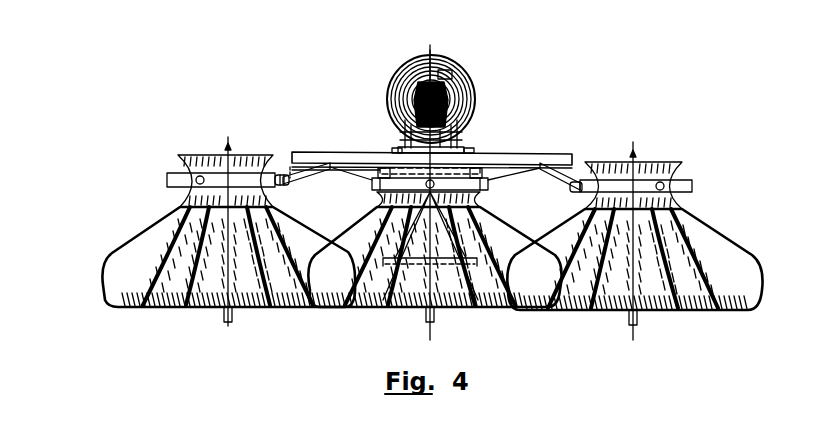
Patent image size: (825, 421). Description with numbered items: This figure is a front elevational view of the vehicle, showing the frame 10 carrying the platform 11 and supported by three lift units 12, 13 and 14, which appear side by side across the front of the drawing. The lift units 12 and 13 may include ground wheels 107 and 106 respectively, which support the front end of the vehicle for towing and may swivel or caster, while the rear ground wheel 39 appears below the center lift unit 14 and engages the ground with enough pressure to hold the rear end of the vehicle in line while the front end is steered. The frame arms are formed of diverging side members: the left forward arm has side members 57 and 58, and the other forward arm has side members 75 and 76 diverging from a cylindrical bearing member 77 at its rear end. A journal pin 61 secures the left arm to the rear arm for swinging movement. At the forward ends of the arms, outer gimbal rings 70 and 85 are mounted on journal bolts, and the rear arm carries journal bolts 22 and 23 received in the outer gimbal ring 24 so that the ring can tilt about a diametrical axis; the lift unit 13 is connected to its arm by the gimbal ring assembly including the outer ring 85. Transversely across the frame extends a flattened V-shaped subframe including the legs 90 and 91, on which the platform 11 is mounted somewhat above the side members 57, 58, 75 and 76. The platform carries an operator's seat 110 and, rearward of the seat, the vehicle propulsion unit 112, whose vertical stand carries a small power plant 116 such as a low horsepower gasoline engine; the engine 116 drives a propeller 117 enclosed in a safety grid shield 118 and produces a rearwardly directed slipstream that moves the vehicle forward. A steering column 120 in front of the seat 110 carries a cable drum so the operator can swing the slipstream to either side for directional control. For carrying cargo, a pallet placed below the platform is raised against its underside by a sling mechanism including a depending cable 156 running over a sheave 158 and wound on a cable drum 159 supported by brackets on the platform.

The frame 10 is at (340, 184).
The platform 11 is at (452, 144).
The lift unit 12 is at (760, 288).
The lift unit 13 is at (110, 262).
The lift unit 14 is at (352, 230).
The journal bolt 22 is at (488, 186).
The journal bolt 23 is at (380, 184).
The outer gimbal ring 24 is at (482, 195).
The ground wheel 39 is at (432, 322).
The side member 57 is at (572, 165).
The side member 58 is at (526, 176).
The journal pin 61 is at (482, 150).
The outer gimbal ring 70 is at (674, 180).
The side member 75 is at (288, 153).
The side member 76 is at (308, 178).
The cylindrical bearing member 77 is at (378, 152).
The outer gimbal ring 85 is at (176, 170).
The leg 90 is at (532, 153).
The leg 91 is at (332, 152).
The ground wheel 106 is at (228, 322).
The ground wheel 107 is at (636, 325).
The operator's seat 110 is at (398, 100).
The vehicle propulsion unit 112 is at (452, 70).
The power plant 116 is at (416, 64).
The propeller 117 is at (437, 60).
The safety grid shield 118 is at (470, 84).
The steering column 120 is at (458, 100).
The depending cable 156 is at (450, 270).
The sheave 158 is at (476, 153).
The cable drum 159 is at (412, 147).